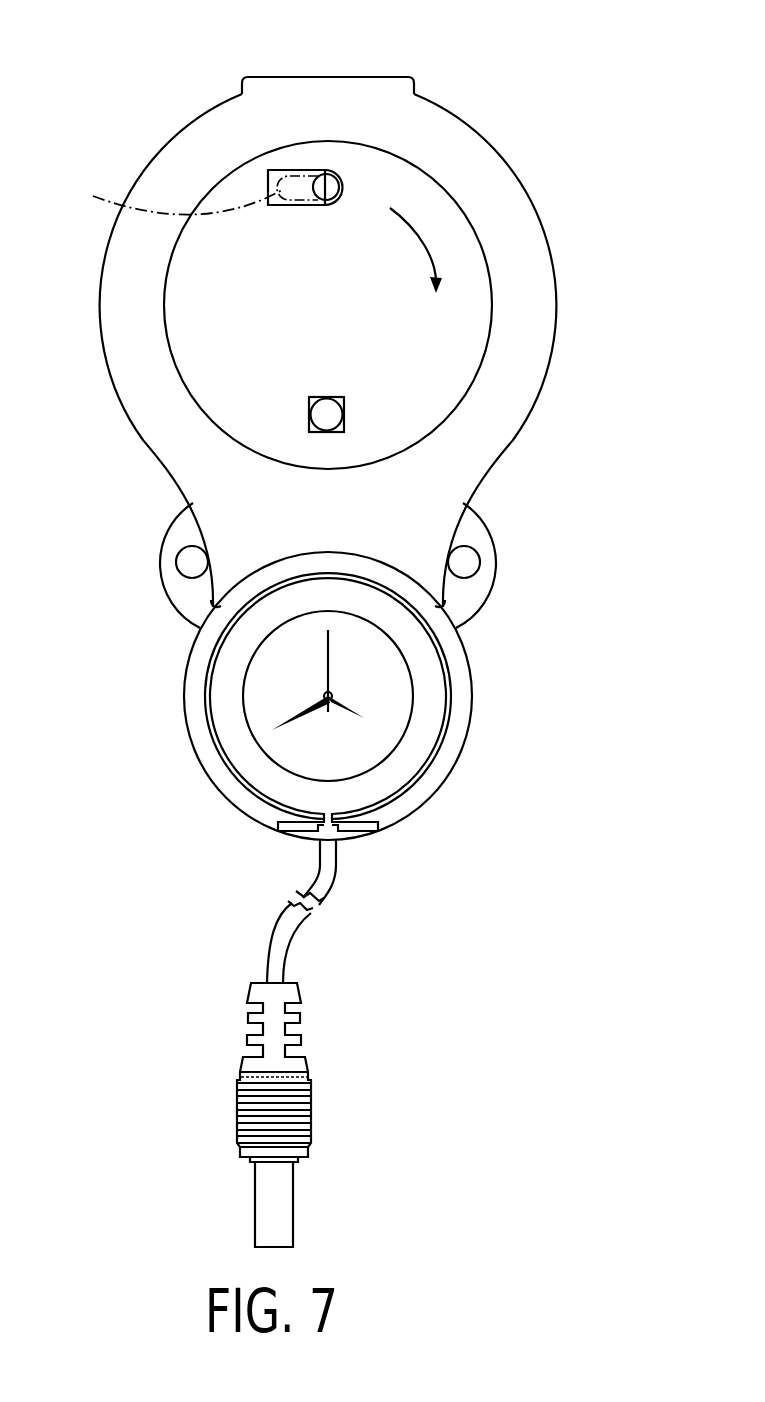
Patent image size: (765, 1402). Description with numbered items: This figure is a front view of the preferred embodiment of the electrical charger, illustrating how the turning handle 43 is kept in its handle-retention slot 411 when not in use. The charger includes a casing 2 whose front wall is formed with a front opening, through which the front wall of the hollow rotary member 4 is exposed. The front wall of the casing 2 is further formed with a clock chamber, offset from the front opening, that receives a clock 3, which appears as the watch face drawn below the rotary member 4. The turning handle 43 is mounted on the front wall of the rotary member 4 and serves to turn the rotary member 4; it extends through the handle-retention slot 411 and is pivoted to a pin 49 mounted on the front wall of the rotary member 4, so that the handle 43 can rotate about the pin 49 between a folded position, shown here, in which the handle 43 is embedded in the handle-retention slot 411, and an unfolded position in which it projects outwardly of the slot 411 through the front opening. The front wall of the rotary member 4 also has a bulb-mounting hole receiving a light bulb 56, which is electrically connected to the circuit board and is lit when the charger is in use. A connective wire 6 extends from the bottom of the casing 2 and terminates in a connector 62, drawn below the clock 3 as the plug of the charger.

The casing 2 is at (562, 251).
The hollow rotary member 4 is at (470, 342).
The handle-retention slot 411 is at (297, 172).
The pin 49 is at (326, 173).
The turning handle 43 is at (327, 187).
The light bulb 56 is at (330, 414).
The clock 3 is at (430, 705).
The connective wire 6 is at (320, 1011).
The connector 62 is at (280, 1203).